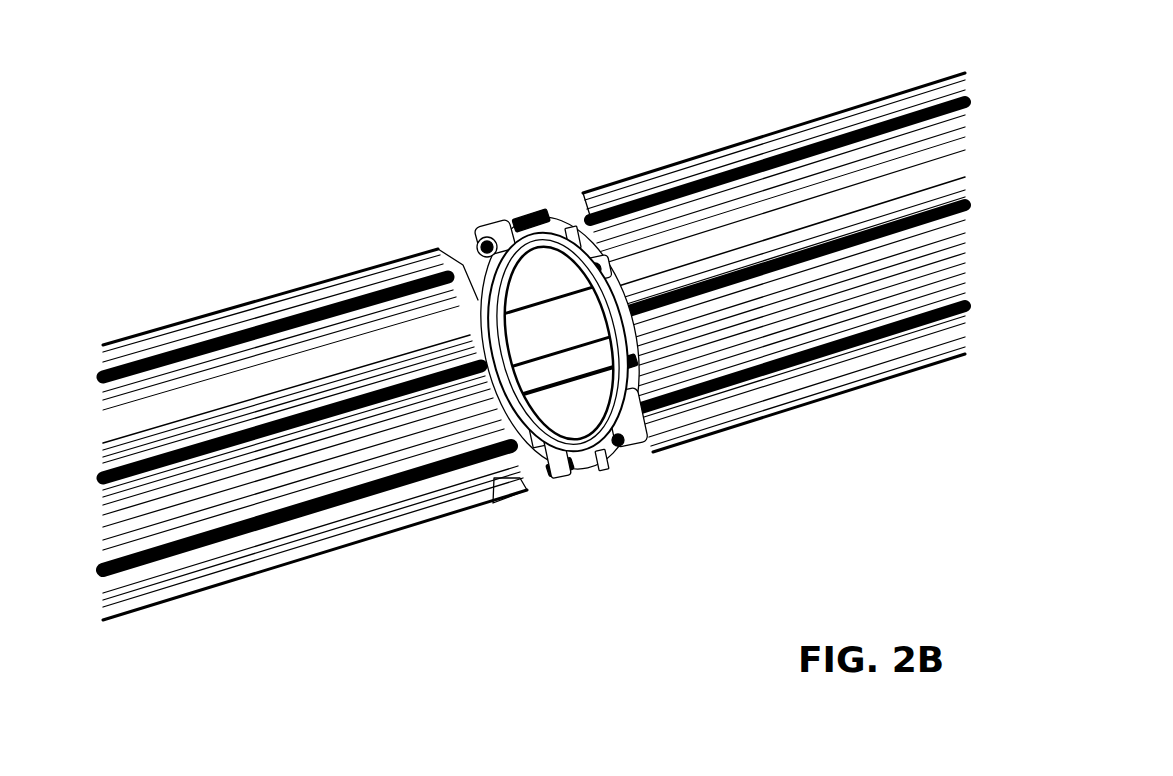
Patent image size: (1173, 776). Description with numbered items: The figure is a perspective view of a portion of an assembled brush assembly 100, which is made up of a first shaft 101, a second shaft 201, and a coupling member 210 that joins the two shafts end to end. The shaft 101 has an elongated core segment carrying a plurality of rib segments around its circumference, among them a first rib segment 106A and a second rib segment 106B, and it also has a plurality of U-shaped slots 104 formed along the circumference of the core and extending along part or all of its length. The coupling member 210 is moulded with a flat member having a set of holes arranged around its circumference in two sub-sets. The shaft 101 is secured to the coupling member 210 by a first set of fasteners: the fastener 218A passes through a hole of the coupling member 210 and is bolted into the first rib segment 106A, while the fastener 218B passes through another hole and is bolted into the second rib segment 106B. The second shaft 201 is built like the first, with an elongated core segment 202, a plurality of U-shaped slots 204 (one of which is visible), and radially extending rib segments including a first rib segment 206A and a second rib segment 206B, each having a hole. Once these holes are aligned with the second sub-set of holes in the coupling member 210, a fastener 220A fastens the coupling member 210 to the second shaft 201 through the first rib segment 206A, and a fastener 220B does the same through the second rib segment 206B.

The brush assembly 100 is at (527, 350).
The shaft 101 is at (774, 282).
The plurality of U-shaped slots 104 is at (912, 327).
The first rib segment 106A is at (690, 243).
The second rib segment 106B is at (760, 405).
The second shaft 201 is at (308, 392).
The elongated core segment 202 is at (252, 383).
The plurality of U-shaped slots 204 is at (257, 533).
The first rib segment 206A is at (308, 290).
The second rib segment 206B is at (393, 440).
The coupling member 210 is at (575, 346).
The fastener 218A is at (593, 262).
The fastener 218B is at (618, 447).
The fastener 220A is at (528, 216).
The fastener 220B is at (624, 368).